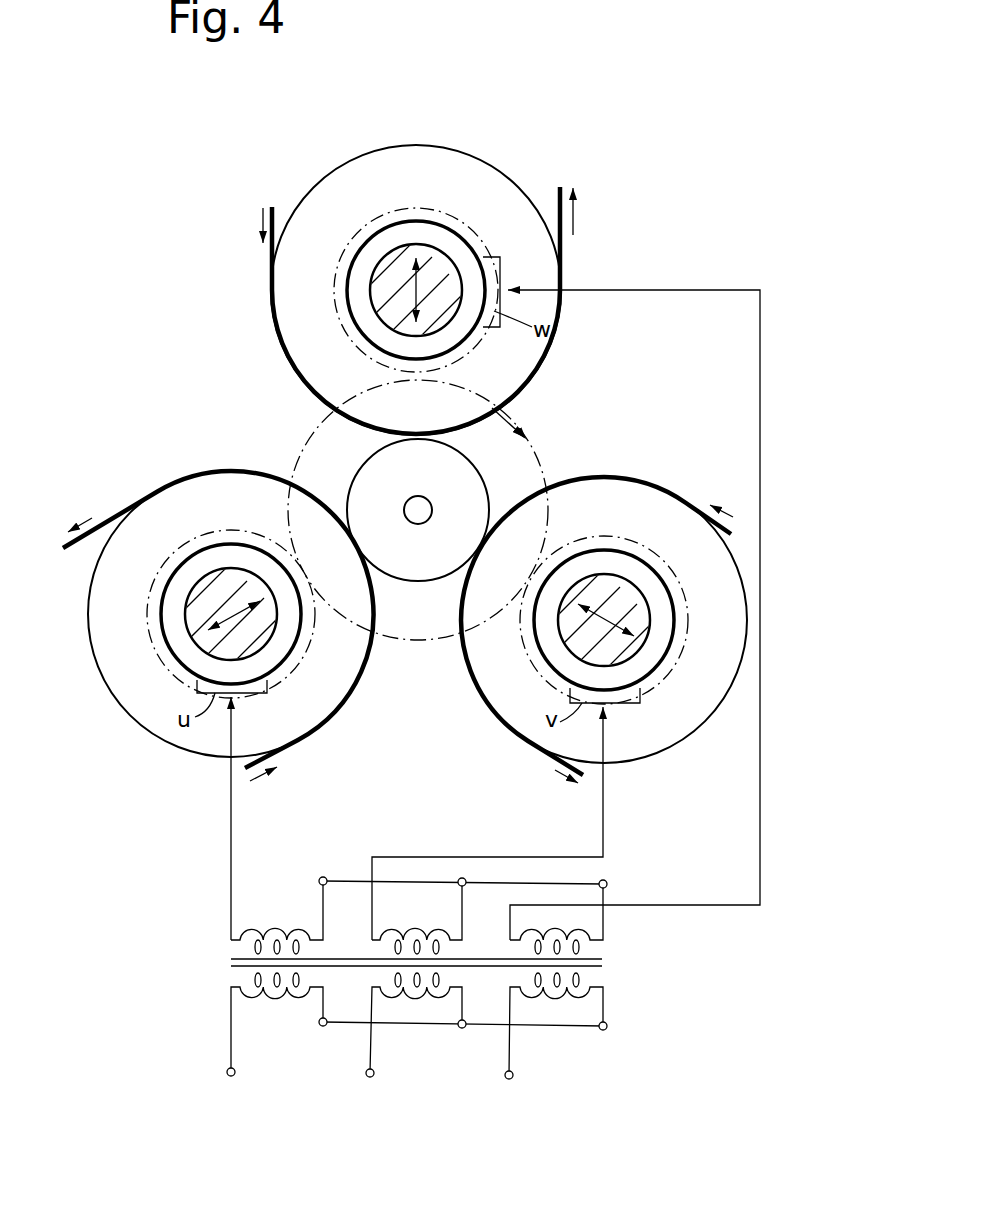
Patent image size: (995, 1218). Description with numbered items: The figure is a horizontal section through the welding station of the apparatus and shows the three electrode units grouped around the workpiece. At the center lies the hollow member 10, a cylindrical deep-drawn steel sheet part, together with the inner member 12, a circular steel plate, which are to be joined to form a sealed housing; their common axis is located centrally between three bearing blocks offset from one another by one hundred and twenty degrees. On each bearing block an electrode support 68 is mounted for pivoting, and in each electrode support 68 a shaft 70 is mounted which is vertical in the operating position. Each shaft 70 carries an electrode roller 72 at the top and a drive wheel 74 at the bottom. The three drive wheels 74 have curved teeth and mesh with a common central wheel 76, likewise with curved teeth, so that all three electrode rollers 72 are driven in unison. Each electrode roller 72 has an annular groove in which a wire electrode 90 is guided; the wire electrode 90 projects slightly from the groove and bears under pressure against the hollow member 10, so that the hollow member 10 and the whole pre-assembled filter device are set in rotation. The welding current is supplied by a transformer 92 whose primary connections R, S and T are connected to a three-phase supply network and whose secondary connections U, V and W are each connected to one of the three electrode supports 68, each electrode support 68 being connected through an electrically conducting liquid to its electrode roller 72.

The hollow member 10 is at (365, 458).
The inner member 12 is at (383, 486).
The electrode support 68 is at (393, 230).
The shaft 70 is at (393, 267).
The electrode roller 72 is at (452, 162).
The drive wheel 74 is at (312, 643).
The central wheel 76 is at (420, 642).
The wire electrode 90 is at (566, 243).
The transformer 92 is at (625, 959).